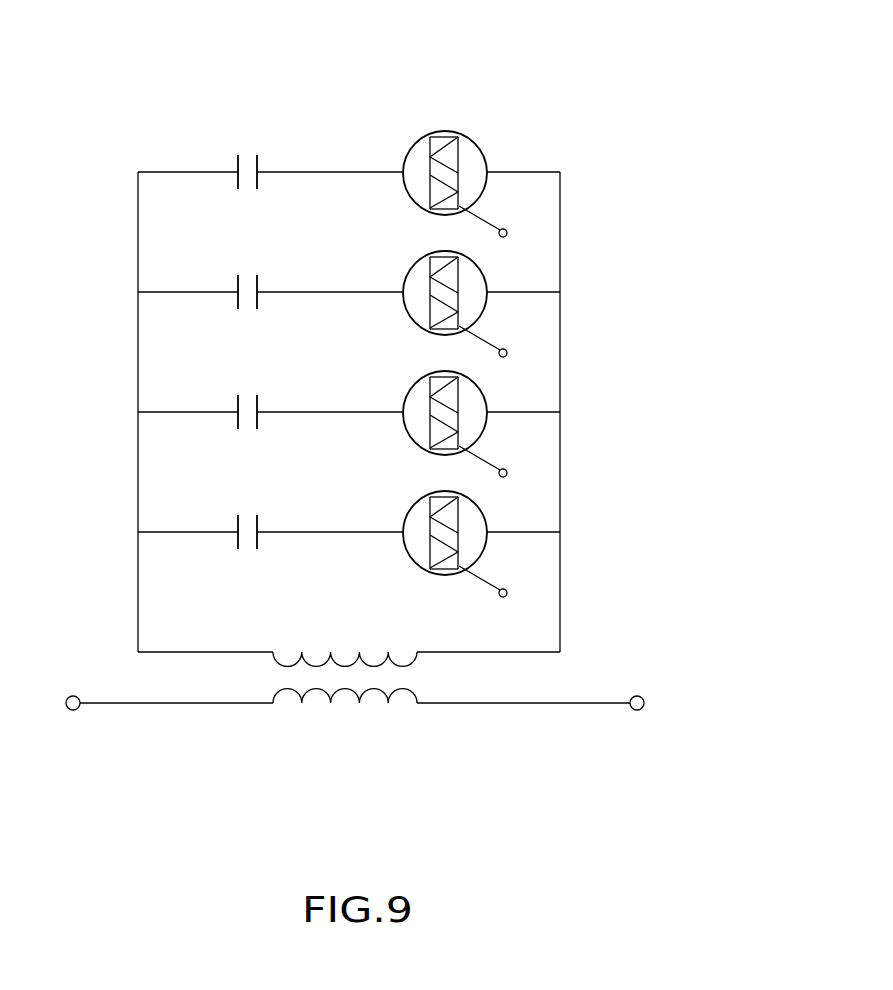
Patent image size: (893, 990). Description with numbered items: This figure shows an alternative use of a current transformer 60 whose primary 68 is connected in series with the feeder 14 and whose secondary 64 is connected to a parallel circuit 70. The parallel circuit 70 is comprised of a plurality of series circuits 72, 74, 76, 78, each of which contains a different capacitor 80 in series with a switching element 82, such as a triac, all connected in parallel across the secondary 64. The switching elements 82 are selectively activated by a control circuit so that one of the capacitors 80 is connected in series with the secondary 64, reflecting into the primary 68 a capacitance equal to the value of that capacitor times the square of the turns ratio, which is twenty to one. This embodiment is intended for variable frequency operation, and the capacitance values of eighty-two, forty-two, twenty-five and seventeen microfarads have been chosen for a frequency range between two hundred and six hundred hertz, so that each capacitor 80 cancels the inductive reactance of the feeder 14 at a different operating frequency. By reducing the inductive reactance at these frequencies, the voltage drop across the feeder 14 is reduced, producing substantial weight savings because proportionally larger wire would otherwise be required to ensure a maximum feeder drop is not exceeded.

The feeder 14 is at (128, 703).
The current transformer 60 is at (548, 685).
The secondary 64 is at (405, 665).
The primary 68 is at (408, 695).
The parallel circuit 70 is at (645, 292).
The series circuit 72 is at (172, 172).
The series circuit 74 is at (162, 292).
The series circuit 76 is at (167, 412).
The series circuit 78 is at (167, 532).
The capacitor 80 is at (262, 178).
The switching element 82 is at (470, 142).